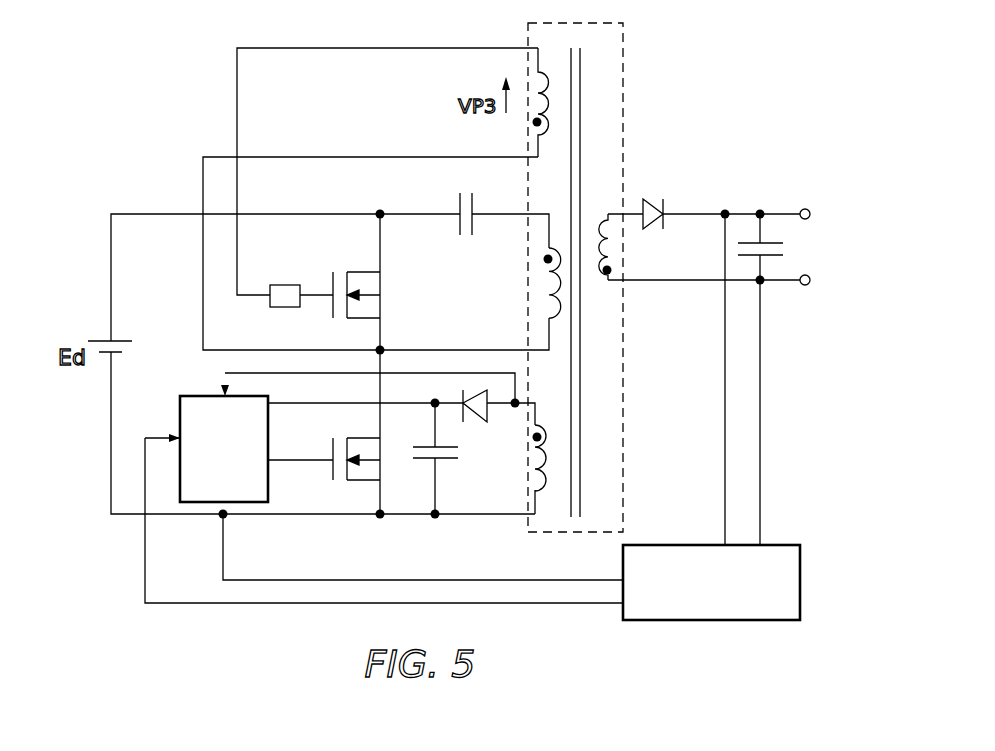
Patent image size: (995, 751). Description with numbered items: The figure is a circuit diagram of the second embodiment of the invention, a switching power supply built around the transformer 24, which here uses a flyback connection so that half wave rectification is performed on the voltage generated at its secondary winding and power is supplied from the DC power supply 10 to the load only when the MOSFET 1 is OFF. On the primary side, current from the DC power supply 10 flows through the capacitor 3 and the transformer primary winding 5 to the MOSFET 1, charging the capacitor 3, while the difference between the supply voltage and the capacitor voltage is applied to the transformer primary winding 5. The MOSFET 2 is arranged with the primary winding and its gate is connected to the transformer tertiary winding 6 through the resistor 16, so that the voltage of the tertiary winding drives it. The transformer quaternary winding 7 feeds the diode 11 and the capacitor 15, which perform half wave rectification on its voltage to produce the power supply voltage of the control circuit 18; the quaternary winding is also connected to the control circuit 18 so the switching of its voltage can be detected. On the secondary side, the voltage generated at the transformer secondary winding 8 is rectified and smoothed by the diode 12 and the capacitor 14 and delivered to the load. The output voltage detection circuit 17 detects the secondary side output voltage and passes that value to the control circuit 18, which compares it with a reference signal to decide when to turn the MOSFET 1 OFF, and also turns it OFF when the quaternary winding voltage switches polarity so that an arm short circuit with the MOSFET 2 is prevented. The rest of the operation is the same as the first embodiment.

The MOSFET 1 is at (352, 485).
The MOSFET 2 is at (356, 272).
The capacitor 3 is at (458, 236).
The transformer primary winding 5 is at (545, 283).
The transformer tertiary winding 6 is at (540, 80).
The transformer quaternary winding 7 is at (542, 493).
The transformer secondary winding 8 is at (600, 213).
The DC power supply 10 is at (95, 333).
The diode 11 is at (478, 422).
The diode 12 is at (650, 200).
The capacitor 14 is at (776, 240).
The capacitor 15 is at (445, 460).
The resistor 16 is at (282, 285).
The output voltage detection circuit 17 is at (778, 545).
The control circuit 18 is at (193, 396).
The transformer 24 is at (625, 50).